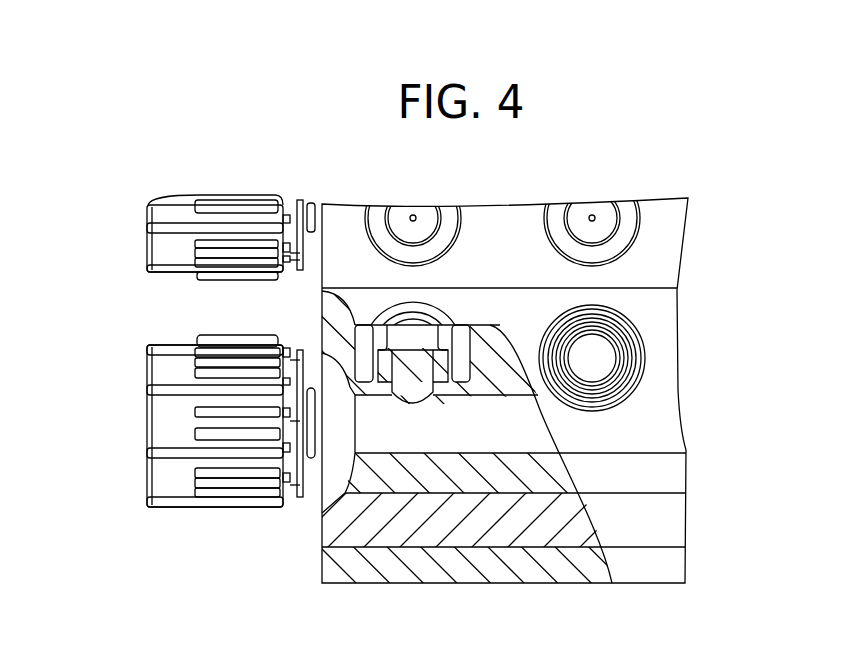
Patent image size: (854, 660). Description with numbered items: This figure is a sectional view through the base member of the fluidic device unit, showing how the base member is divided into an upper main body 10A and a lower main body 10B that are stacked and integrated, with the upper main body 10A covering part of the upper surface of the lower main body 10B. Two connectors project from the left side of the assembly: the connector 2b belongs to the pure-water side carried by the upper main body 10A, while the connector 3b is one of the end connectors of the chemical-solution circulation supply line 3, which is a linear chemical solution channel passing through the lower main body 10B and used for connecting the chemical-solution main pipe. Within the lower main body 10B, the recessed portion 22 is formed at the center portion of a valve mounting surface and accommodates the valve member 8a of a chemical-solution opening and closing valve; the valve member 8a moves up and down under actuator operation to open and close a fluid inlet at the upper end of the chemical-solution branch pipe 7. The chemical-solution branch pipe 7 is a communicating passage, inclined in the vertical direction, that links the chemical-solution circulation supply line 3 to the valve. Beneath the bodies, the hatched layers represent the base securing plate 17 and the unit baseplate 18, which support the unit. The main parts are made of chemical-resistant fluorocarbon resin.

The connector 2b is at (147, 255).
The connector 3b is at (147, 432).
The upper main body 10A is at (657, 243).
The lower main body 10B is at (657, 358).
The valve member 8a is at (422, 337).
The recessed portion 22 is at (370, 332).
The chemical-solution branch pipe 7 is at (415, 393).
The chemical-solution circulation supply line 3 is at (540, 436).
The base securing plate 17 is at (677, 518).
The unit baseplate 18 is at (677, 560).